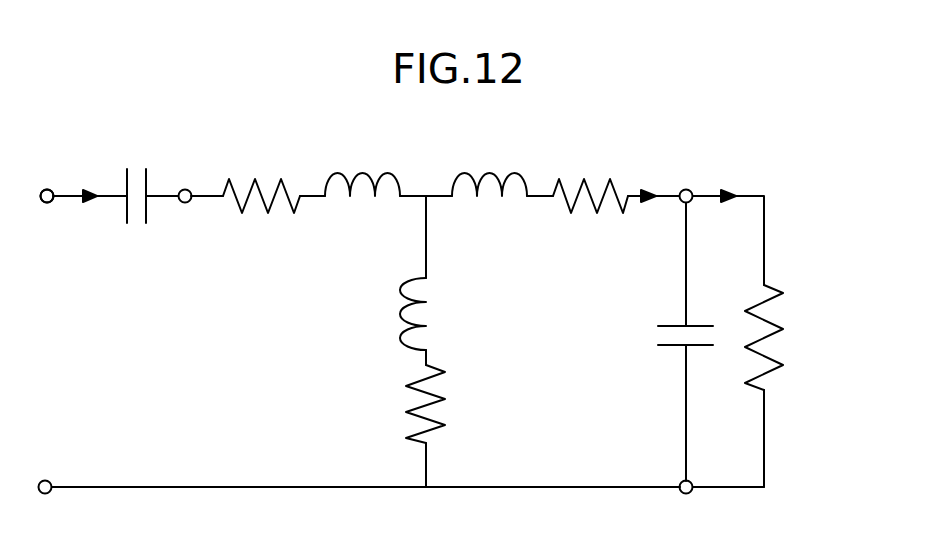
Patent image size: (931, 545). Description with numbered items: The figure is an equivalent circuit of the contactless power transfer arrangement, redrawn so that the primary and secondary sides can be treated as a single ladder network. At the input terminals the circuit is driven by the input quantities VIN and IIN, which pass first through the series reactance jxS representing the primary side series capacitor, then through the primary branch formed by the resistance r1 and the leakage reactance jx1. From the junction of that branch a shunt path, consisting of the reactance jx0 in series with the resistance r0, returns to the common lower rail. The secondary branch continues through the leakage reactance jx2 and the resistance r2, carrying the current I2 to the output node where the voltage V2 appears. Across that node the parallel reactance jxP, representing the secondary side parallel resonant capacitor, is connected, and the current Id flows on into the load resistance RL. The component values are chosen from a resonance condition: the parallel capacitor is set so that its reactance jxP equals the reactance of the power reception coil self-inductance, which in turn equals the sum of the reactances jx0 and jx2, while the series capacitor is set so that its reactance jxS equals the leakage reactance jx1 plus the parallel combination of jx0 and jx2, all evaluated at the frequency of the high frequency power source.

The input voltage V_IN' VIN is at (46, 181).
The input current I_IN' IIN is at (80, 181).
The reactance of the primary side series capacitor jxS is at (133, 212).
The primary resistance r1' r1 is at (261, 217).
The primary side reactance x1' jx1 is at (362, 214).
The secondary side reactance x2 jx2 is at (489, 214).
The secondary resistance r2 is at (590, 218).
The secondary current I2 is at (651, 182).
The secondary voltage V2 is at (692, 328).
The load current Id is at (733, 182).
The shunt reactance x0' jx0 is at (446, 314).
The core loss resistance r0' r0 is at (447, 404).
The reactance of the secondary side parallel resonant capacitor jxP is at (659, 343).
The load resistance R_L RL is at (785, 337).